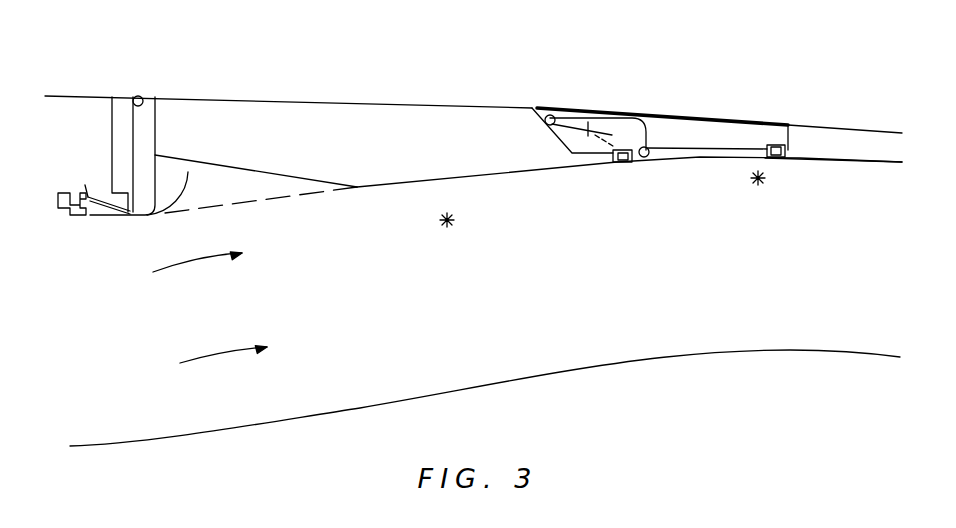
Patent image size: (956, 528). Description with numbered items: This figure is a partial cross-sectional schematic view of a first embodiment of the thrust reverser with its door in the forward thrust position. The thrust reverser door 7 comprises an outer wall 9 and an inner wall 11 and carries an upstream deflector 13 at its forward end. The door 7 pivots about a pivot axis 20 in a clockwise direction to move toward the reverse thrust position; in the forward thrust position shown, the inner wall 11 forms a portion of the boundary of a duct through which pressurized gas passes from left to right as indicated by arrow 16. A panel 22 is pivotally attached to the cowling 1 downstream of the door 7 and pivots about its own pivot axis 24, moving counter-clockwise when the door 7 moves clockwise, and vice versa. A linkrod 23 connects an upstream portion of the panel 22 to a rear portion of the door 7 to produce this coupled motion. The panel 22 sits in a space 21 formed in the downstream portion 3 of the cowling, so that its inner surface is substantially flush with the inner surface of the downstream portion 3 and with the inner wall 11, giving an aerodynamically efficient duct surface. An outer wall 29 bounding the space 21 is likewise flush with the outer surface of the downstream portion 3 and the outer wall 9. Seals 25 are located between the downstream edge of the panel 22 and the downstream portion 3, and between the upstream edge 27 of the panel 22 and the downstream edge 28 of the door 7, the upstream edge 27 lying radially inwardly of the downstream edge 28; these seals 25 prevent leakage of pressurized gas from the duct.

The cowling 1 is at (88, 93).
The downstream portion of the cowling 3 is at (808, 121).
The thrust reverser door 7 is at (242, 117).
The outer wall 9 is at (442, 103).
The inner wall 11 is at (420, 180).
The upstream deflector 13 is at (152, 178).
The arrow 16 is at (183, 270).
The pivot axis 20 is at (447, 220).
The space 21 is at (666, 135).
The panel 22 is at (705, 153).
The linkrod 23 is at (588, 152).
The pivot axis 24 is at (762, 180).
The seals 25 is at (625, 158).
The upstream edge of the panel 27 is at (614, 175).
The downstream edge of the thrust reverser door 28 is at (620, 137).
The outer wall 29 is at (716, 121).